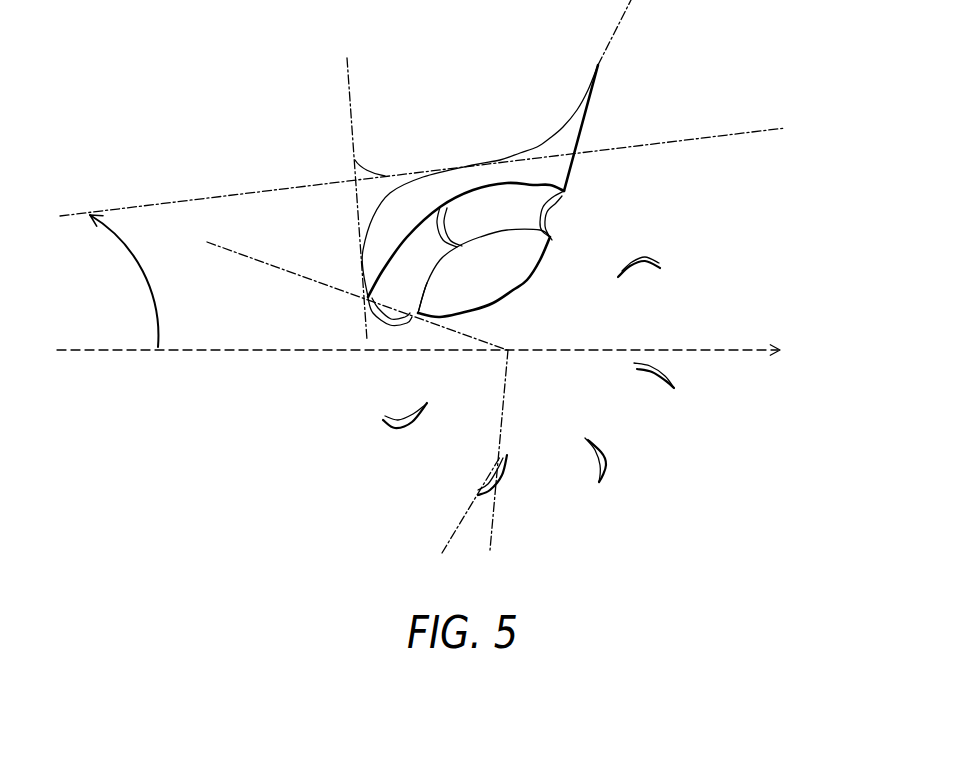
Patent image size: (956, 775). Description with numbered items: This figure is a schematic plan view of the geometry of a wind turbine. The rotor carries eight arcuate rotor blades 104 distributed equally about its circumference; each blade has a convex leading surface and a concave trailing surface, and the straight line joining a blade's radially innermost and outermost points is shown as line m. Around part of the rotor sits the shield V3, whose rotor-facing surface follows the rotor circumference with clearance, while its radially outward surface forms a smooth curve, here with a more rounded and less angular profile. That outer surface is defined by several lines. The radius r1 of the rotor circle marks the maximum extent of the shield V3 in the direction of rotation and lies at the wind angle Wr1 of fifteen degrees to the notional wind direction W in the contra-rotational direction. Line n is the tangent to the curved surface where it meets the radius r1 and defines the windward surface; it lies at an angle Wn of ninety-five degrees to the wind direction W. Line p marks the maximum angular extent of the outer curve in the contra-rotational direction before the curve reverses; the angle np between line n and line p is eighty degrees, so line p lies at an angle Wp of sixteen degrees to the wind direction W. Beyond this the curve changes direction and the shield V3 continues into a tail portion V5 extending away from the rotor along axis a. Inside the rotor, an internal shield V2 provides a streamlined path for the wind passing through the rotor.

The line n is at (355, 191).
The angle np is at (363, 143).
The axis line a is at (618, 32).
The line p is at (428, 167).
The tail portion V5 is at (562, 182).
The shield V3 is at (427, 212).
The internal shield V2 is at (496, 280).
The radius r1 is at (348, 291).
The angle Wp is at (141, 282).
The angle Wn is at (389, 328).
The wind angle Wr1 is at (430, 325).
The wind direction W is at (430, 350).
The line m is at (465, 513).
The rotor blades 104 is at (603, 453).